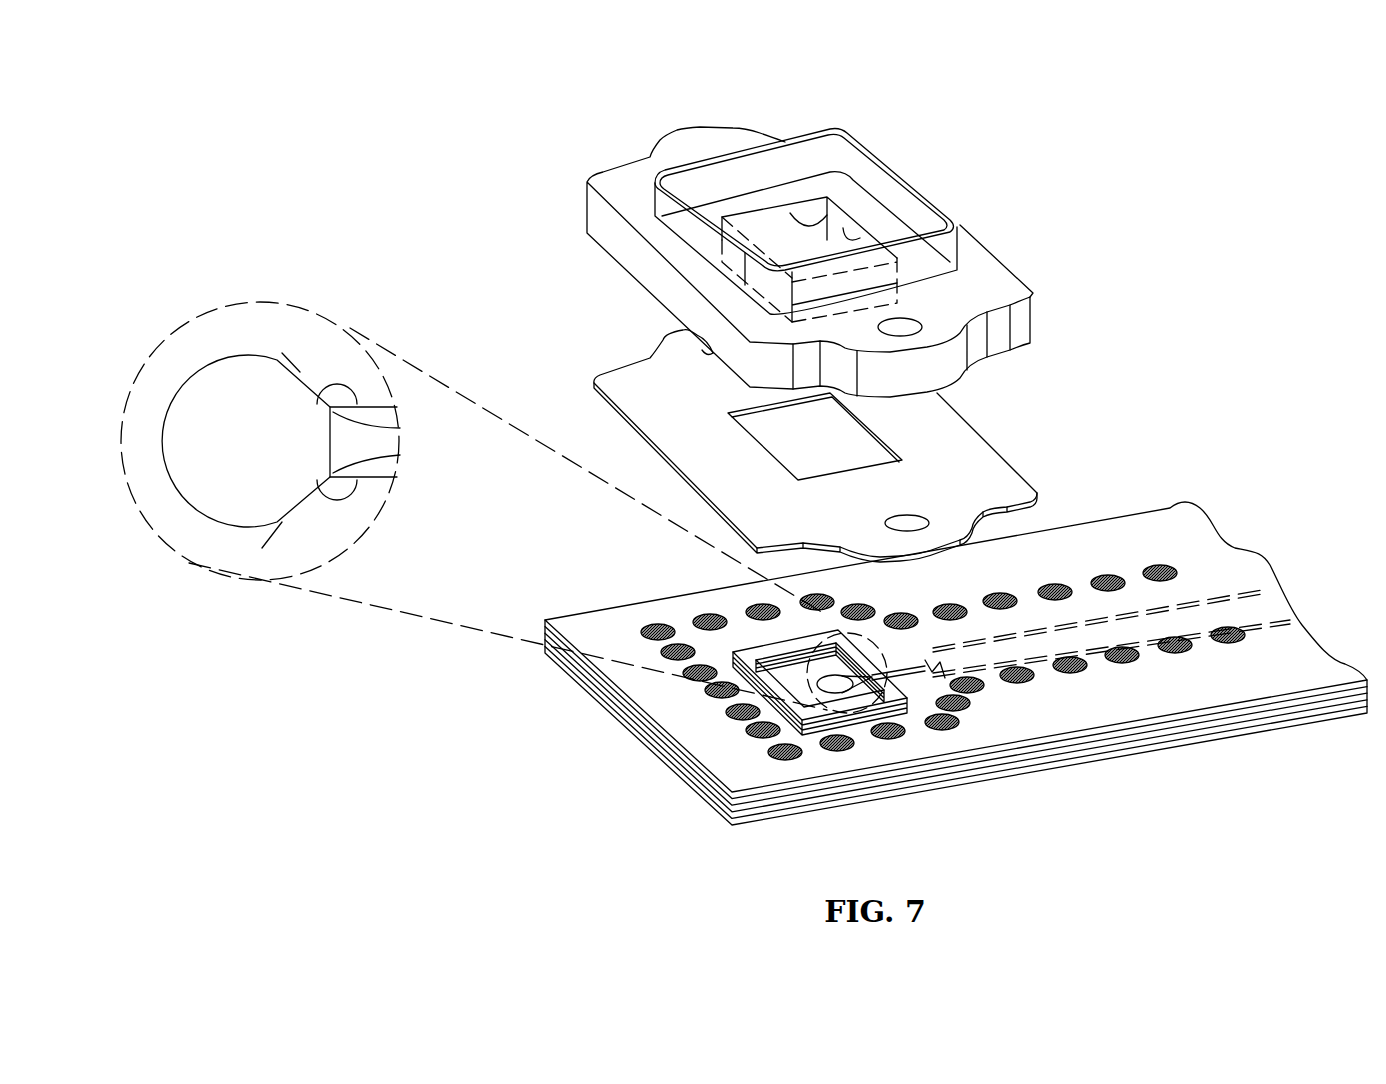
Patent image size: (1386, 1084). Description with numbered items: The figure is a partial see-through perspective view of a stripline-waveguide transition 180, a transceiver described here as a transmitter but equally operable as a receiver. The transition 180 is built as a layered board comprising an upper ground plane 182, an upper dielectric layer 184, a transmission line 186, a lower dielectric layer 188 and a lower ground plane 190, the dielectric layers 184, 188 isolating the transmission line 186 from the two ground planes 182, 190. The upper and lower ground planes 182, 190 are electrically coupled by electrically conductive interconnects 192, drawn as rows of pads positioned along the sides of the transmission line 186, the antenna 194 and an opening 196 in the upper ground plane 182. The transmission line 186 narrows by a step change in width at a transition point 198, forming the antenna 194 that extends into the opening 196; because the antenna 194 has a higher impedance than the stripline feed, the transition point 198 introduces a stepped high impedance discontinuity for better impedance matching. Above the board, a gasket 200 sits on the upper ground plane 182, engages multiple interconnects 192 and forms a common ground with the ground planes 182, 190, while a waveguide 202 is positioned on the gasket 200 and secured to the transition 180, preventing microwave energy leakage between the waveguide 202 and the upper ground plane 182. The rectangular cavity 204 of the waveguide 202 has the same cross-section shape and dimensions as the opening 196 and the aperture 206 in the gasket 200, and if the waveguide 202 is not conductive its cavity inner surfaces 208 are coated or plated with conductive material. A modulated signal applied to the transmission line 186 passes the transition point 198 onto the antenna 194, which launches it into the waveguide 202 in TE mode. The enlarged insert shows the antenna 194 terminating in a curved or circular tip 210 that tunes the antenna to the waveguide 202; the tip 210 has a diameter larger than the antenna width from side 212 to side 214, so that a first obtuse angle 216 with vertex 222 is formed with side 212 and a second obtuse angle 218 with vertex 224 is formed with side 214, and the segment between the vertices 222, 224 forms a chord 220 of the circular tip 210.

The stripline-waveguide transition 180 is at (1103, 368).
The upper ground plane 182 is at (550, 626).
The upper dielectric layer 184 is at (550, 634).
The transmission line 186 is at (1197, 617).
The lower dielectric layer 188 is at (550, 641).
The lower ground plane 190 is at (550, 649).
The electrically conductive interconnects 192 is at (1113, 573).
The antenna 194 is at (940, 670).
The opening 196 is at (787, 670).
The transition point 198 is at (945, 655).
The gasket 200 is at (627, 387).
The waveguide 202 is at (608, 238).
The cavity 204 is at (787, 243).
The aperture 206 is at (797, 448).
The cavity inner surfaces 208 is at (840, 200).
The curved or circular tip 210 is at (602, 663).
The side 212 is at (370, 405).
The side 214 is at (373, 482).
The first obtuse angle 216 is at (347, 378).
The second obtuse angle 218 is at (352, 487).
The chord 220 is at (330, 443).
The vertex 222 is at (398, 428).
The vertex 224 is at (398, 455).